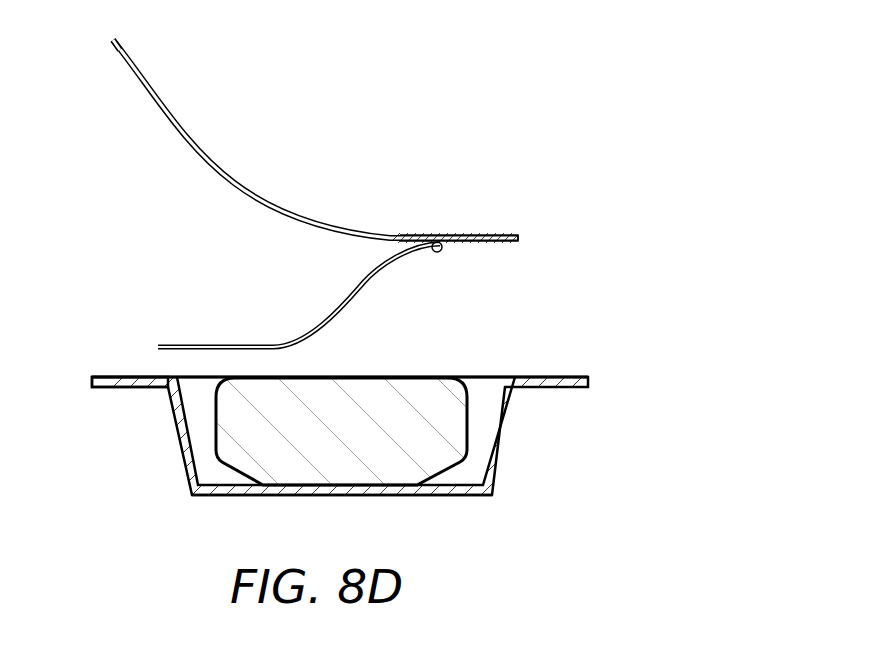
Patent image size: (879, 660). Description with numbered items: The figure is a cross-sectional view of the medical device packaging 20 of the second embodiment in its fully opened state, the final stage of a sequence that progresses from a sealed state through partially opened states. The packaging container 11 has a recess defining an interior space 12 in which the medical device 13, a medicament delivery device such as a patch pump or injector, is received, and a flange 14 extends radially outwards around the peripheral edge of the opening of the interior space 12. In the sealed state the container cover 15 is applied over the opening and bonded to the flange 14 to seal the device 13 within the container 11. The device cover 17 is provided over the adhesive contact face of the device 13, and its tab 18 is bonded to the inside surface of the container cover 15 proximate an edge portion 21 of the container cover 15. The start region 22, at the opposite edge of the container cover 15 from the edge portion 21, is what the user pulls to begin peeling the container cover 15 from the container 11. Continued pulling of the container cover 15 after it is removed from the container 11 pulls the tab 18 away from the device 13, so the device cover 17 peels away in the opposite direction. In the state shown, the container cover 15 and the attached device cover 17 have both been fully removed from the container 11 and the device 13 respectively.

The packaging container 11 is at (178, 450).
The interior space 12 is at (217, 473).
The medical device 13 is at (340, 470).
The flange 14 is at (115, 375).
The container cover 15 is at (206, 158).
The device cover 17 is at (383, 278).
The tab 18 is at (442, 243).
The medical device packaging 20 is at (393, 84).
The edge portion 21 is at (500, 243).
The start region 22 is at (113, 41).